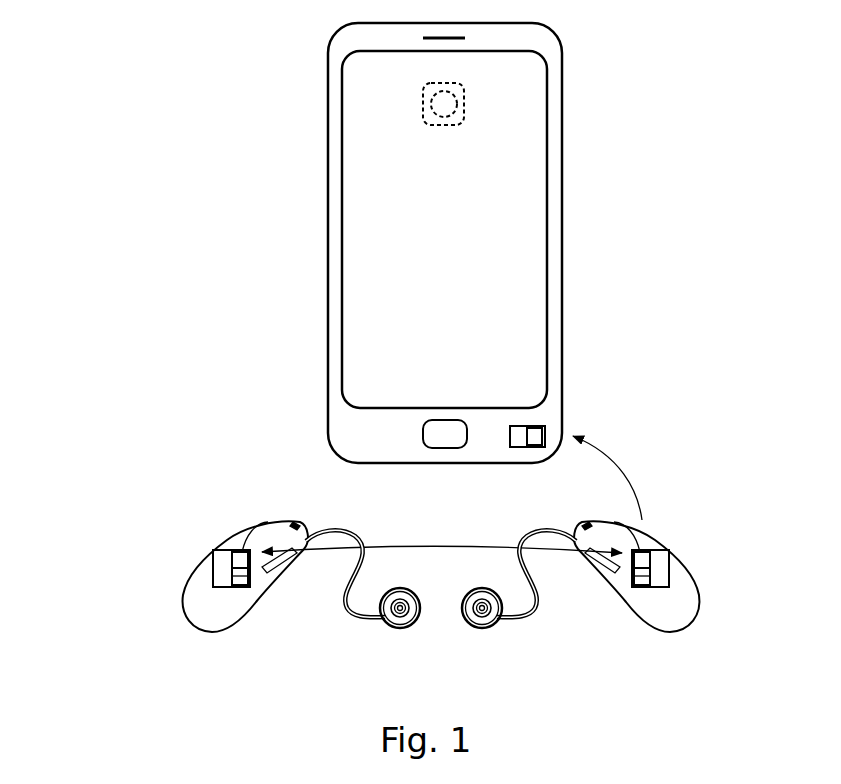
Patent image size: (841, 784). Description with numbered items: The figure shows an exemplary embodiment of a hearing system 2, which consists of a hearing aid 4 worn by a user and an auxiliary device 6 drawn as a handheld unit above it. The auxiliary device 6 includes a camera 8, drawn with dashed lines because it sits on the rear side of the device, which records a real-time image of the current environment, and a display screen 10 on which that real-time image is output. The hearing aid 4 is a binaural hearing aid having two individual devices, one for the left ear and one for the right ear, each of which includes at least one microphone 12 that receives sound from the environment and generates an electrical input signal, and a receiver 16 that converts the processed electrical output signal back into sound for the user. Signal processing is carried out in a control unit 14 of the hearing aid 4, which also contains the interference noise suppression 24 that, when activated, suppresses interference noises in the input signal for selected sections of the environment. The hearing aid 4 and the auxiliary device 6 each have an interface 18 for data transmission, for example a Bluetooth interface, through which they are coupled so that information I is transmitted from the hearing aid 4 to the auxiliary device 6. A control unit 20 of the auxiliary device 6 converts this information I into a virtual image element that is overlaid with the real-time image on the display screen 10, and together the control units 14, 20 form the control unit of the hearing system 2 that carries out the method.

The hearing system 2 is at (143, 132).
The hearing aid 4 is at (198, 513).
The auxiliary device 6 is at (311, 236).
The camera 8 is at (465, 100).
The display screen 10 is at (547, 138).
The microphone 12 is at (303, 516).
The control unit 14 is at (213, 575).
The receiver 16 is at (397, 628).
The interface 18 is at (545, 425).
The control unit 20 is at (518, 426).
The interference noise suppression 24 is at (247, 588).
The information I is at (622, 463).